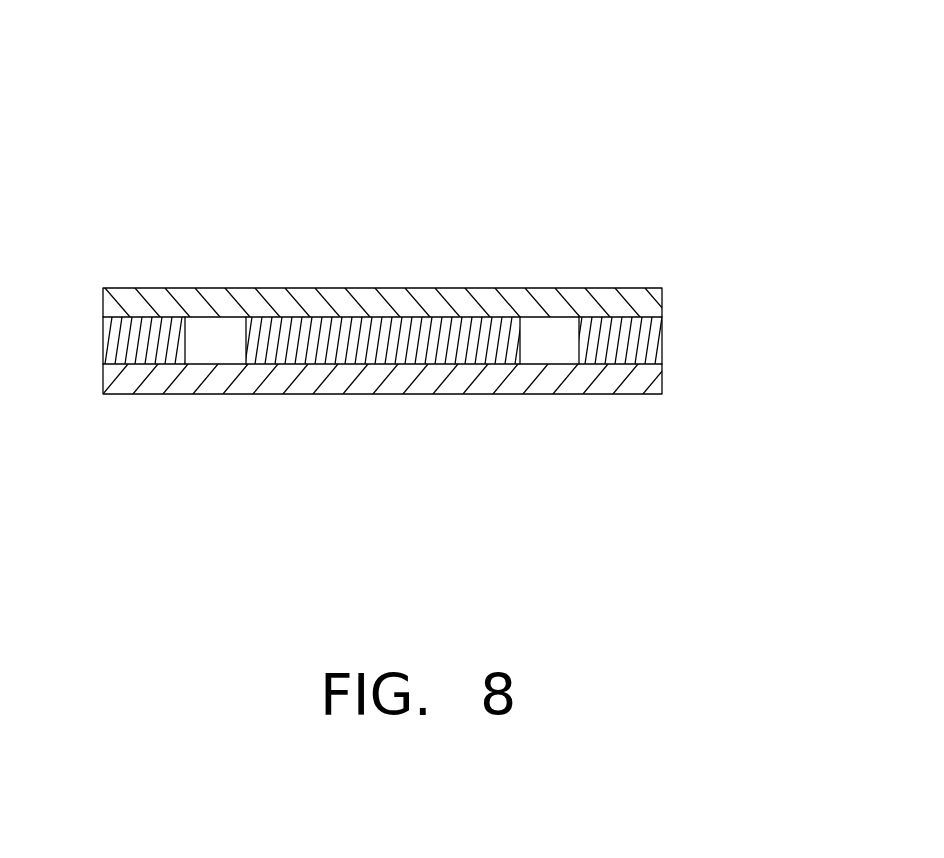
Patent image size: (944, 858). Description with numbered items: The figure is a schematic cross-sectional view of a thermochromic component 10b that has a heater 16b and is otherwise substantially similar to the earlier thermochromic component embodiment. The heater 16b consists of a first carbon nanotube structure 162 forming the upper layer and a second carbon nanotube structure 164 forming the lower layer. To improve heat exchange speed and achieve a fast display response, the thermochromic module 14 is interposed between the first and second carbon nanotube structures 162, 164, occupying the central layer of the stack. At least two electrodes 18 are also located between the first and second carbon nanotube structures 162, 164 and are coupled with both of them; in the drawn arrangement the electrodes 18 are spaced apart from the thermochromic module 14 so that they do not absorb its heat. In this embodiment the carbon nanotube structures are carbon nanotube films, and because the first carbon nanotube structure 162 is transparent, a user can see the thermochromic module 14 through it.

The thermochromic component 10b is at (352, 75).
The thermochromic module 14 is at (369, 350).
The heater 16b is at (800, 283).
The first carbon nanotube structure 162 is at (650, 303).
The second carbon nanotube structure 164 is at (652, 375).
The electrodes 18 is at (123, 346).